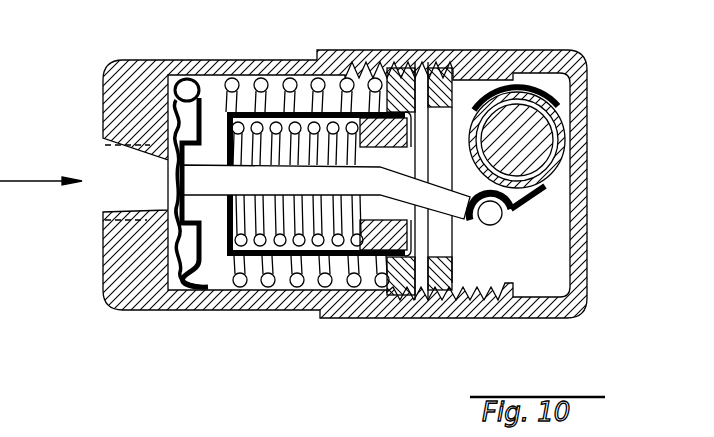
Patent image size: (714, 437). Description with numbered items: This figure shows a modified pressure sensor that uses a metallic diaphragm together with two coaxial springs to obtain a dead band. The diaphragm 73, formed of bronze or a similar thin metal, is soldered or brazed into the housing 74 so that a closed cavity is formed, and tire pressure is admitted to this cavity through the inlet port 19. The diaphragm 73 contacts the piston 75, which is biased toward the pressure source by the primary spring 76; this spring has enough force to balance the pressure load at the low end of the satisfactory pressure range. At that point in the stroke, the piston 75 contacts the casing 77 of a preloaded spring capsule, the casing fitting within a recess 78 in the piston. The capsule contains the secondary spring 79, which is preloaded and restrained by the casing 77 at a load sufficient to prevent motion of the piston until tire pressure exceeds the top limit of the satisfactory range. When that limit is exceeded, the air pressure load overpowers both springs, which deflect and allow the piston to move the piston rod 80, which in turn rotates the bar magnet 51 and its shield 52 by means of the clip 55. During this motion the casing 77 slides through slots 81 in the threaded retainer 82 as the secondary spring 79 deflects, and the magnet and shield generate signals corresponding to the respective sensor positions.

The inlet port 19 is at (37, 179).
The bar magnet 51 is at (550, 141).
The shield 52 is at (548, 100).
The clip 55 is at (510, 208).
The diaphragm 73 is at (173, 80).
The housing 74 is at (100, 70).
The piston 75 is at (215, 197).
The primary spring 76 is at (243, 258).
The casing 77 is at (309, 290).
The recess 78 is at (326, 192).
The secondary spring 79 is at (275, 124).
The piston rod 80 is at (470, 243).
The slots 81 is at (370, 258).
The threaded retainer 82 is at (410, 146).